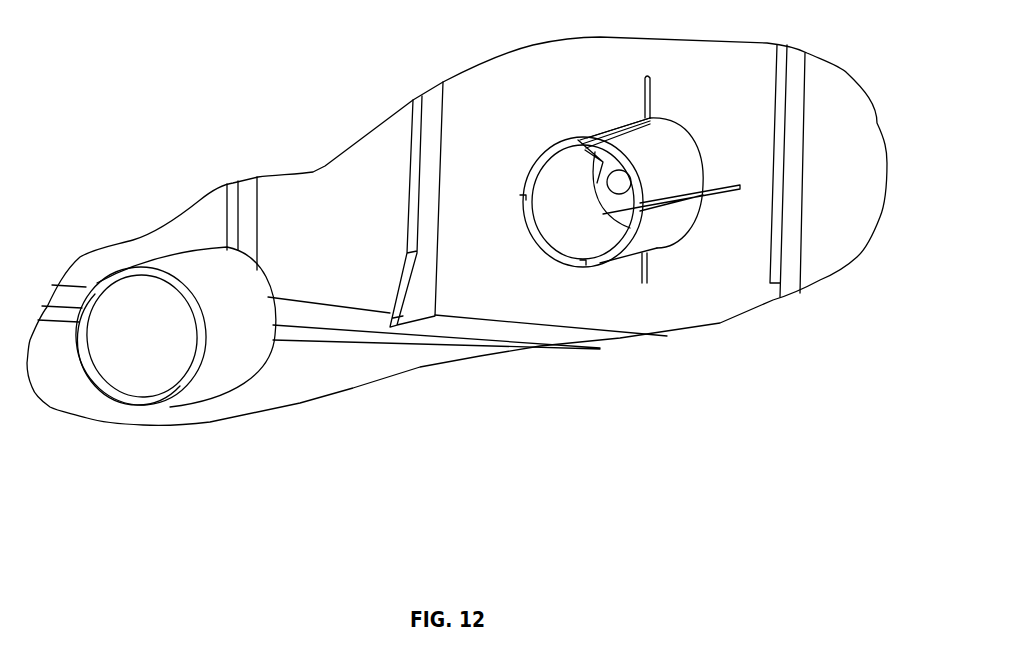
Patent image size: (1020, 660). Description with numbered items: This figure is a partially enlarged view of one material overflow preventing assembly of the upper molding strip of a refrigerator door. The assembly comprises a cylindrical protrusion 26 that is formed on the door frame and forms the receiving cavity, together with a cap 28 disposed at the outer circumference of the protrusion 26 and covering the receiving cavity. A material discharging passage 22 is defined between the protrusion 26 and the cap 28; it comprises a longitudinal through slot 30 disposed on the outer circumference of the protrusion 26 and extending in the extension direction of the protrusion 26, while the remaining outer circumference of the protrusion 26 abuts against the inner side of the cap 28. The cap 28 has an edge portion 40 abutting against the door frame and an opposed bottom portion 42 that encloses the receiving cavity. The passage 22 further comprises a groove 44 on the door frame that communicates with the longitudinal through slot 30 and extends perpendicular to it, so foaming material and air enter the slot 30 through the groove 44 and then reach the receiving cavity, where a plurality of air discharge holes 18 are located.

The air discharge hole 18 is at (598, 170).
The material discharging passage 22 is at (738, 234).
The protrusion 26 is at (658, 227).
The cap 28 is at (228, 317).
The longitudinal through slot 30 is at (675, 198).
The edge portion 40 is at (290, 303).
The bottom portion 42 is at (140, 345).
The groove 44 is at (740, 190).